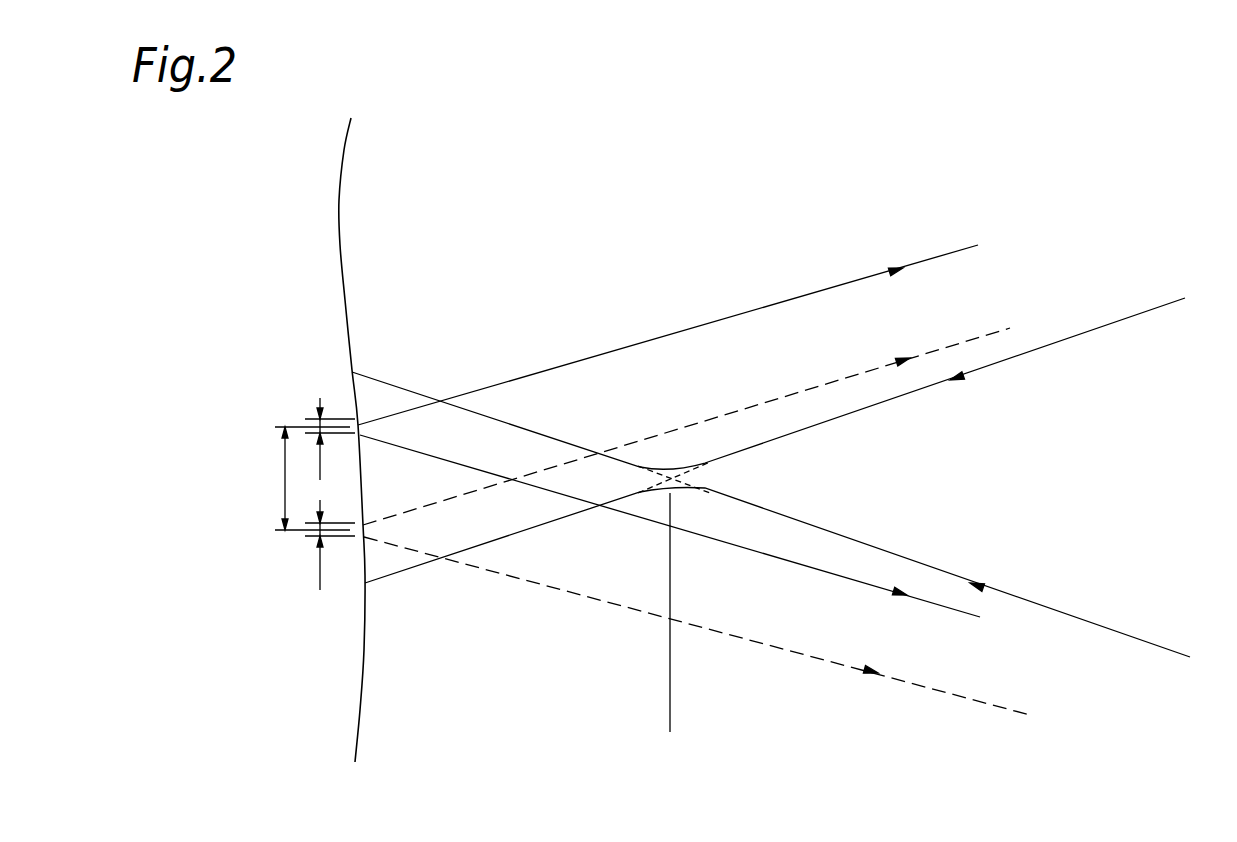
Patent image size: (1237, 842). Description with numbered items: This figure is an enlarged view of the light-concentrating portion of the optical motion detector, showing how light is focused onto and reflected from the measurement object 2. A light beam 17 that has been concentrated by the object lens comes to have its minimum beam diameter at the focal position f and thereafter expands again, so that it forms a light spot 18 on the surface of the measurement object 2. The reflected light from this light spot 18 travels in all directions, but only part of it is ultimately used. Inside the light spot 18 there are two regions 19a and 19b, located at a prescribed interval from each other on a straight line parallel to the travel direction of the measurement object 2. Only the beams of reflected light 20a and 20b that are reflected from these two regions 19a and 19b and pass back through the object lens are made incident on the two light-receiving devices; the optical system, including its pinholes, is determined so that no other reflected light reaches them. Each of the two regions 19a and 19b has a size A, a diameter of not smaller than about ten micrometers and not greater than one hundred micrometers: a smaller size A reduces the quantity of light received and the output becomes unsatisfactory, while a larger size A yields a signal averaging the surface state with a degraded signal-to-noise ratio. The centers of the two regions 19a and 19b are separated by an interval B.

The measurement object 2 is at (339, 189).
The light beam 17 is at (1177, 300).
The light spot 18 is at (248, 368).
The region 19a is at (362, 432).
The region 19b is at (373, 528).
The reflected light 20a is at (778, 302).
The reflected light 20b is at (1013, 710).
The focal position f is at (673, 628).
The size of the two regions A is at (311, 494).
The interval between the centers of the two regions B is at (306, 478).